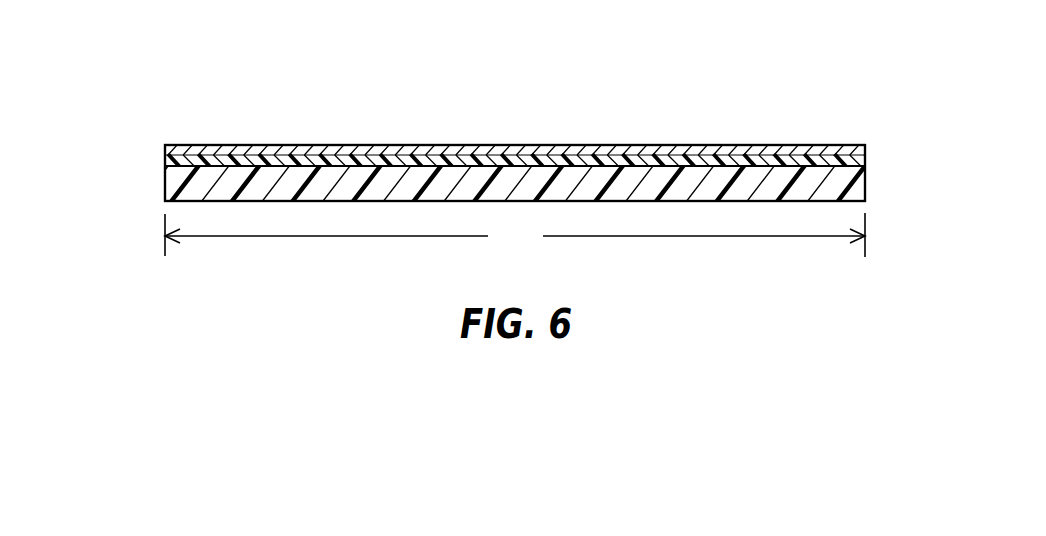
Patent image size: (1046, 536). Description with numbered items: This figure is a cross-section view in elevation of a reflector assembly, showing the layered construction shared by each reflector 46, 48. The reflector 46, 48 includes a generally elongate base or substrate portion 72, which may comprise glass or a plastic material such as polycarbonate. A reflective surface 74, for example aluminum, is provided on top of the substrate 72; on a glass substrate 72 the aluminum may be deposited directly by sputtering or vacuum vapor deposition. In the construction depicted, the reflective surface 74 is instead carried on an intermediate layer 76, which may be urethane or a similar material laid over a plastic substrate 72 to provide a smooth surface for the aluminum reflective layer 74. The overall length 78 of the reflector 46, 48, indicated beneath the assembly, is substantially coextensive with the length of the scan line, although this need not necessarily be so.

The reflector 46 is at (263, 55).
The reflector 48 is at (258, 50).
The substrate portion 72 is at (867, 182).
The reflective surface 74 is at (867, 151).
The intermediate layer 76 is at (165, 156).
The length 78 is at (515, 235).